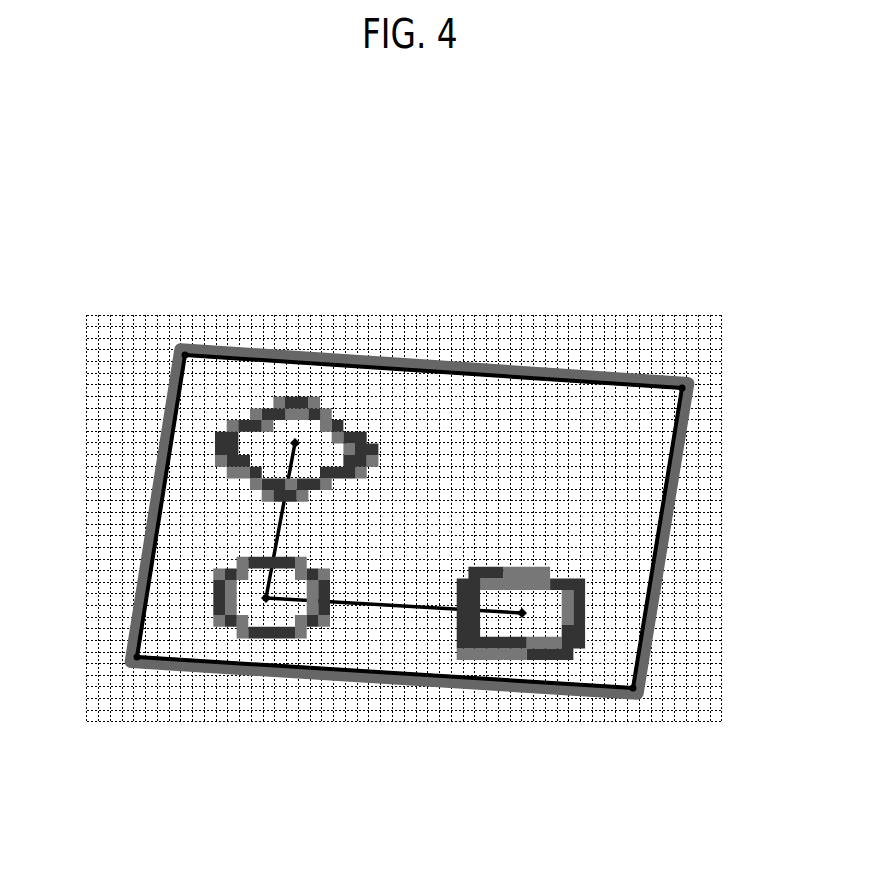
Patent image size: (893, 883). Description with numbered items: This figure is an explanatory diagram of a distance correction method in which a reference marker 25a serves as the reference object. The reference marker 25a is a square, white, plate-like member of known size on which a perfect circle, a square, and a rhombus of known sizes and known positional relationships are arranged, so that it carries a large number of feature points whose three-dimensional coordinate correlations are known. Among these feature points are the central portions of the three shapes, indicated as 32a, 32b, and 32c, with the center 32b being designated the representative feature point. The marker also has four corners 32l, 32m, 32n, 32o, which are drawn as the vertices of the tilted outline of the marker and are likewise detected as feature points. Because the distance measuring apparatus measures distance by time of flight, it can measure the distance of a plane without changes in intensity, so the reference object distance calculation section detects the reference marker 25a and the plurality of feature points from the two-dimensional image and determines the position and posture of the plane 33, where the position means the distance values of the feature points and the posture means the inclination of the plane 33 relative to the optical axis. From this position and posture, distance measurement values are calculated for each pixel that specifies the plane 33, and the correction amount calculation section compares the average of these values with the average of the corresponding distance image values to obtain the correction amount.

The reference marker 25a is at (393, 395).
The plane 33 is at (563, 372).
The central portion of the perfect circle 32a is at (295, 443).
The central portion of the square 32b is at (266, 598).
The central portion of the rhombus 32c is at (522, 613).
The corner 32l is at (185, 355).
The corner 32m is at (137, 657).
The corner 32n is at (633, 688).
The corner 32o is at (682, 388).